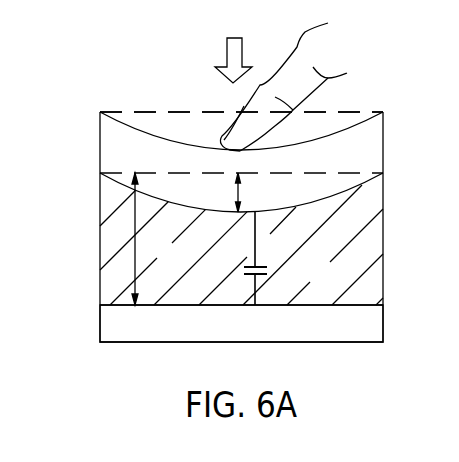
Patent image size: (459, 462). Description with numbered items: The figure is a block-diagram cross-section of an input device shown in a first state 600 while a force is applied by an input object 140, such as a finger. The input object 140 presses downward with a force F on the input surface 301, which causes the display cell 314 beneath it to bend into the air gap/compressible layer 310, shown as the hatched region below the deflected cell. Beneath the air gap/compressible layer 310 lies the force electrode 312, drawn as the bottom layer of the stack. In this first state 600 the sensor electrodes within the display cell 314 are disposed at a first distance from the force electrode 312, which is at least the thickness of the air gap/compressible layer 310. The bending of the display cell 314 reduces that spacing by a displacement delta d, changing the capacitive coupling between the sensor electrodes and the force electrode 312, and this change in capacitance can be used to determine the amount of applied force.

The first state 600 is at (135, 84).
The input object 140 is at (283, 65).
The input surface 301 is at (358, 117).
The display cell 314 is at (363, 142).
The air gap/compressible layer 310 is at (348, 285).
The force electrode 312 is at (348, 328).